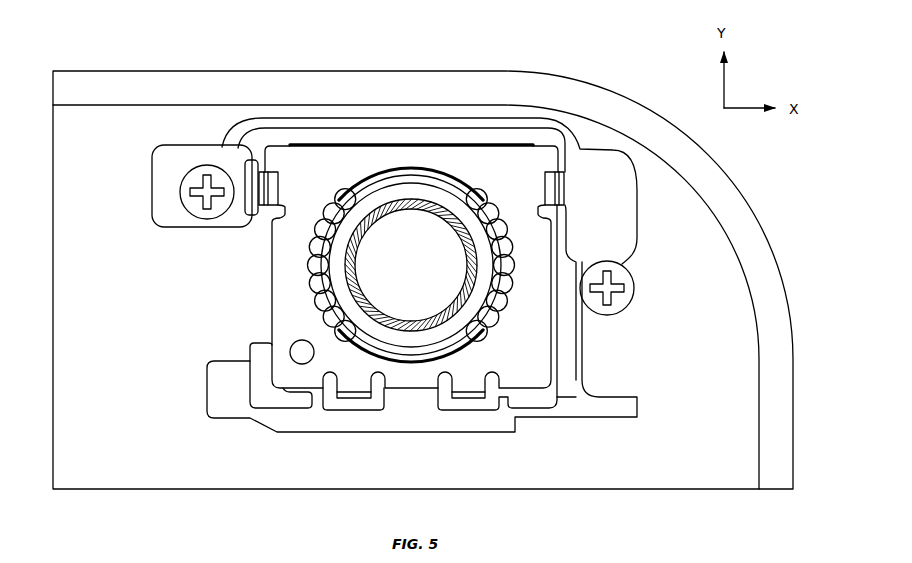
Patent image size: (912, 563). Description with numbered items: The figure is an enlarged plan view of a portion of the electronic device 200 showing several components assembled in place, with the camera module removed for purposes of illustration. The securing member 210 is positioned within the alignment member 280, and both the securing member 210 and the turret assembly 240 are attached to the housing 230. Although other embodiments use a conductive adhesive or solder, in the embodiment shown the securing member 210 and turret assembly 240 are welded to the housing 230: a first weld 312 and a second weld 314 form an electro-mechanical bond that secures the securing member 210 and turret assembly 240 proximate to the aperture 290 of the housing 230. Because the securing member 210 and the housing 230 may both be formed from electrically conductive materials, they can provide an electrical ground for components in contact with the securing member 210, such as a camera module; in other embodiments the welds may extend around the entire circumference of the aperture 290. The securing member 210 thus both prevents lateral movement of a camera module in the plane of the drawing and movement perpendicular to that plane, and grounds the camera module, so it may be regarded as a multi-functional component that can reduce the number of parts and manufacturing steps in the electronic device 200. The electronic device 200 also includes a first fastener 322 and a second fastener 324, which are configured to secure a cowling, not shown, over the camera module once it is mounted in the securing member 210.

The electronic device 200 is at (94, 62).
The housing 230 is at (128, 340).
The alignment member 280 is at (586, 200).
The first fastener 322 is at (210, 165).
The second fastener 324 is at (628, 266).
The securing member 210 is at (271, 312).
The turret assembly 240 is at (476, 170).
The aperture 290 is at (425, 275).
The first weld 312 is at (308, 188).
The second weld 314 is at (516, 220).